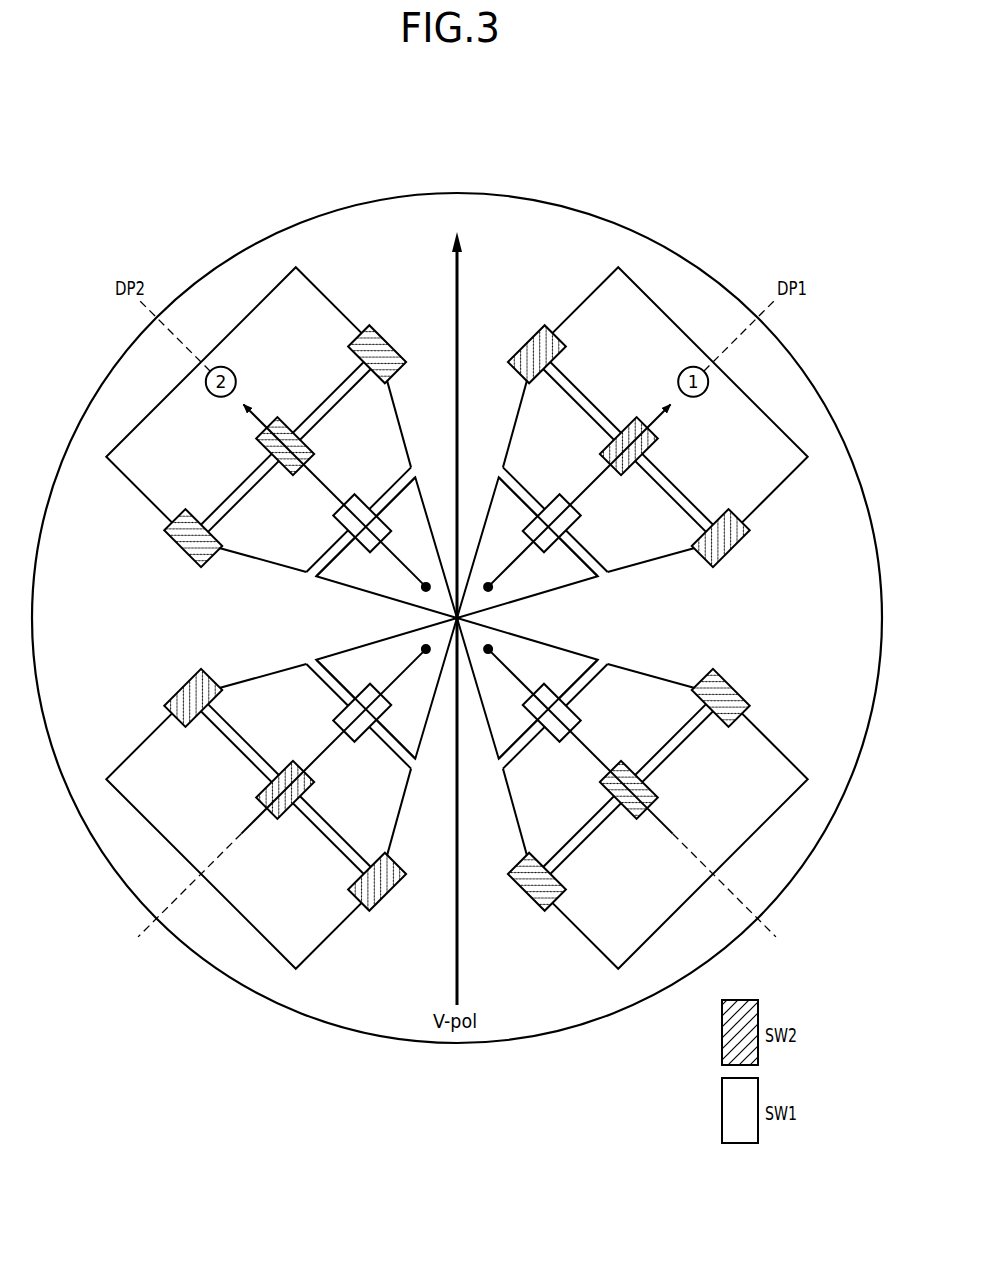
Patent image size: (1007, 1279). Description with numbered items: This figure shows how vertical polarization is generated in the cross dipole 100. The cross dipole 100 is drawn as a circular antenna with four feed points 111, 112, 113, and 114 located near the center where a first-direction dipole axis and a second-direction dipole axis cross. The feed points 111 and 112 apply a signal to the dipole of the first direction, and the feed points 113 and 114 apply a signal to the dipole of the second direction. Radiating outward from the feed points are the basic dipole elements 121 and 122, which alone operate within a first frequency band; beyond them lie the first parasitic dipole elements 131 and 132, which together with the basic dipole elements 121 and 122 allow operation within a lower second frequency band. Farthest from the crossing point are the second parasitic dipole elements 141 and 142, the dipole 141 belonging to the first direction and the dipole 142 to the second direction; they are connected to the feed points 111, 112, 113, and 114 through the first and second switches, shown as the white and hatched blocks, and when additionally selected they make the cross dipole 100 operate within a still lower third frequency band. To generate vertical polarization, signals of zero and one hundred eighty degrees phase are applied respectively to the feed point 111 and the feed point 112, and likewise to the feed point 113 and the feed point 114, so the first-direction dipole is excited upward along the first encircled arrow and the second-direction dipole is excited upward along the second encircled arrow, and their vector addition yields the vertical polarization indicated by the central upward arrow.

The cross dipole 100 is at (684, 226).
The feed point 111 is at (419, 647).
The feed point 112 is at (497, 592).
The feed point 113 is at (487, 657).
The feed point 114 is at (430, 582).
The basic dipole element 121 is at (503, 572).
The basic dipole element 122 is at (456, 617).
The first parasitic dipole element 131 is at (456, 617).
The first parasitic dipole element 132 is at (456, 617).
The second parasitic dipole element 141 is at (456, 617).
The second parasitic dipole element 142 is at (456, 617).